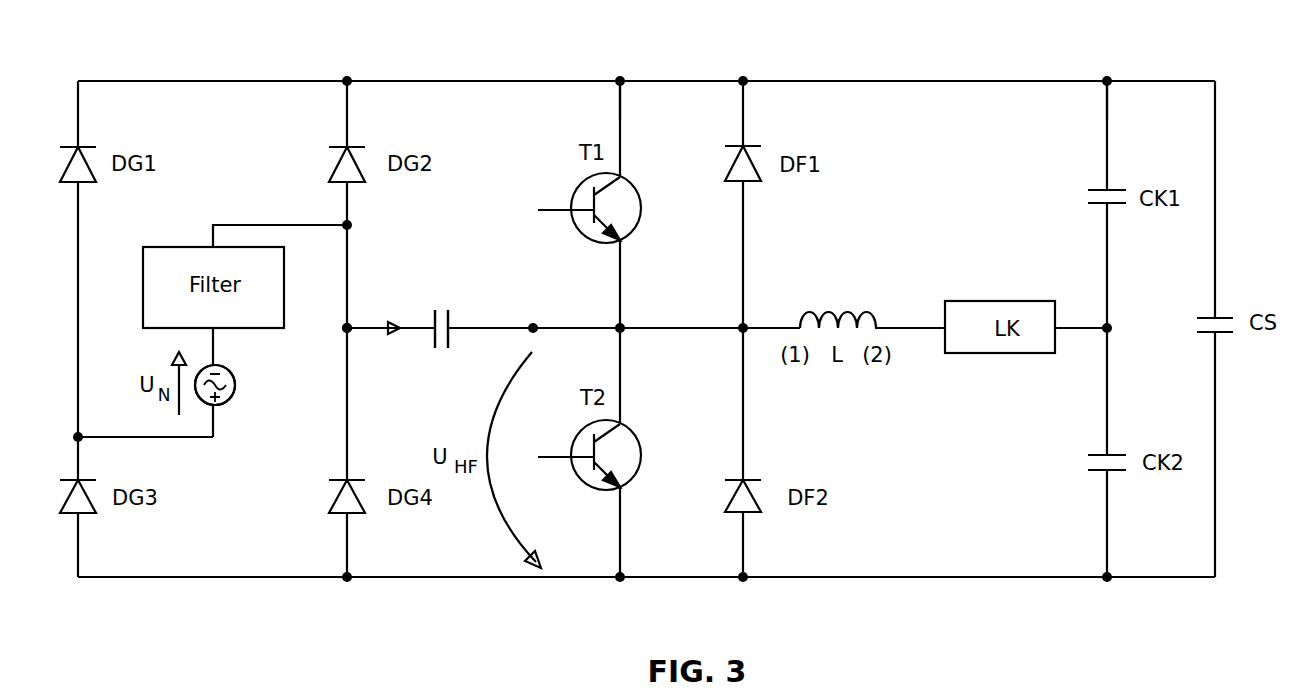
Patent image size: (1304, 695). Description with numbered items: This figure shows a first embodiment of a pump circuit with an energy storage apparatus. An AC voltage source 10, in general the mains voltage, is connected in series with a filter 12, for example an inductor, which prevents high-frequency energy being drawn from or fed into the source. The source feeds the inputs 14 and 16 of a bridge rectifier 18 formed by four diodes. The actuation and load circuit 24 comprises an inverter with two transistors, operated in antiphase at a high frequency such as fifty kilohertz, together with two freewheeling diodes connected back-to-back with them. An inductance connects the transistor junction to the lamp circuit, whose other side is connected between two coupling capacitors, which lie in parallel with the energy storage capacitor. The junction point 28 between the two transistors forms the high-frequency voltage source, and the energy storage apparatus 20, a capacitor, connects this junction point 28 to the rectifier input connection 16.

The AC voltage source 10 is at (235, 385).
The filter 12 is at (245, 276).
The input 14 is at (143, 424).
The input connection 16 is at (388, 316).
The rectifier 18 is at (646, 65).
The energy storage apparatus 20 is at (443, 315).
The actuation and load circuit 24 is at (607, 68).
The junction point 28 is at (530, 312).